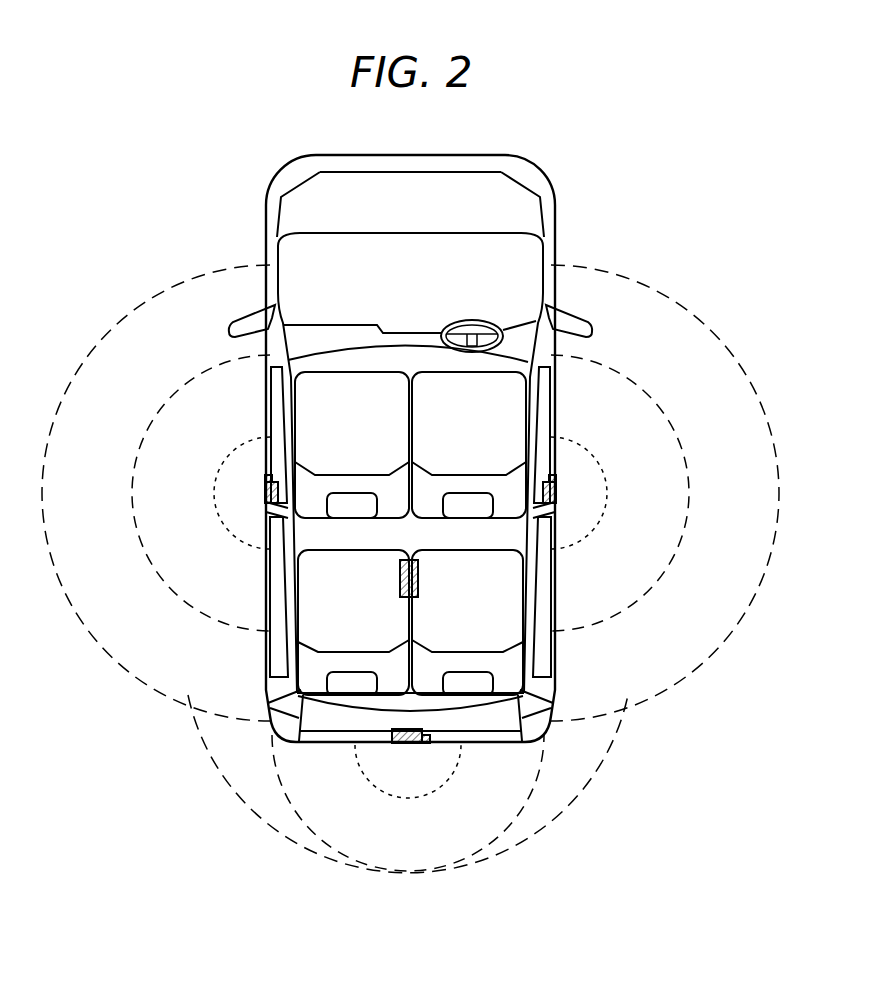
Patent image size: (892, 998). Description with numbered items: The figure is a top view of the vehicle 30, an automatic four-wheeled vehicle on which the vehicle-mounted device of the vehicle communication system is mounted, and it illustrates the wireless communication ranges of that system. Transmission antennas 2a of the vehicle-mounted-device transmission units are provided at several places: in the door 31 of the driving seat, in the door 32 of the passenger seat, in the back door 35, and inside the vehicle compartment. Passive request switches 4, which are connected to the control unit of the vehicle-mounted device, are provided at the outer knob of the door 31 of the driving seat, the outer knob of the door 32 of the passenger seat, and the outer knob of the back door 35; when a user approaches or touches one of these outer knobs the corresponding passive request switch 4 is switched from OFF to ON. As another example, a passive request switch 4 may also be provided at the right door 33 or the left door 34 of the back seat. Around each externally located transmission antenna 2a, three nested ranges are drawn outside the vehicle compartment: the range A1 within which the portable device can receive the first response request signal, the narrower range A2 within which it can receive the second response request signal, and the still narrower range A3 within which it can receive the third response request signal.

The vehicle 30 is at (412, 156).
The door of driving seat 31 is at (555, 452).
The door of passenger seat 32 is at (265, 448).
The right door of back seat 33 is at (556, 603).
The left door of back seat 34 is at (265, 603).
The back door 35 is at (372, 743).
The transmission antenna 2a is at (265, 495).
The passive request switch 4 is at (265, 478).
The range of first response request signal A1 is at (60, 412).
The range of second response request signal A2 is at (139, 456).
The range of third response request signal A3 is at (212, 492).